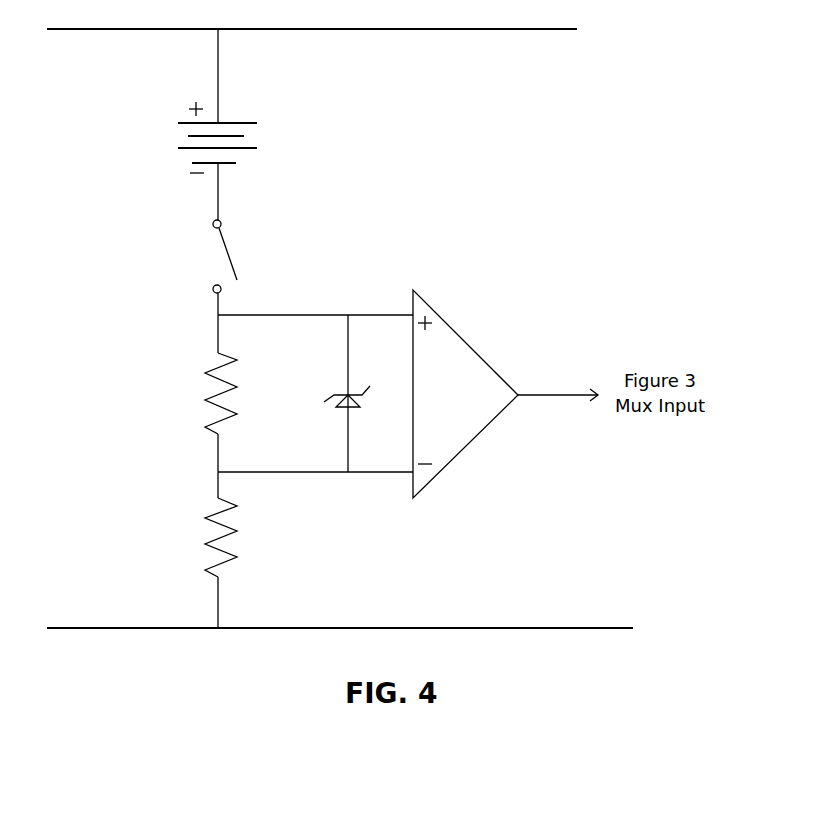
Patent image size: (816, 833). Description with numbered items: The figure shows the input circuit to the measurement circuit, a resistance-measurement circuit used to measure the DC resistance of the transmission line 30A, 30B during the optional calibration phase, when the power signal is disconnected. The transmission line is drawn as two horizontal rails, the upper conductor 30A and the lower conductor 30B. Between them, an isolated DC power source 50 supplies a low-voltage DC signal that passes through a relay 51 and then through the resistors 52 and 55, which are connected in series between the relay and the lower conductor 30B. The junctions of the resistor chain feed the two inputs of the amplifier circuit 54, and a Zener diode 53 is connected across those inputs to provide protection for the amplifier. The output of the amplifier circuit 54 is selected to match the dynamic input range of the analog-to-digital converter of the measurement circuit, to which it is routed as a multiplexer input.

The transmission line 30A is at (397, 29).
The transmission line 30B is at (433, 628).
The isolated DC power source 50 is at (264, 152).
The relay 51 is at (230, 258).
The resistor 52 is at (212, 371).
The Zener diode 53 is at (331, 394).
The amplifier circuit 54 is at (460, 352).
The resistor 55 is at (215, 512).